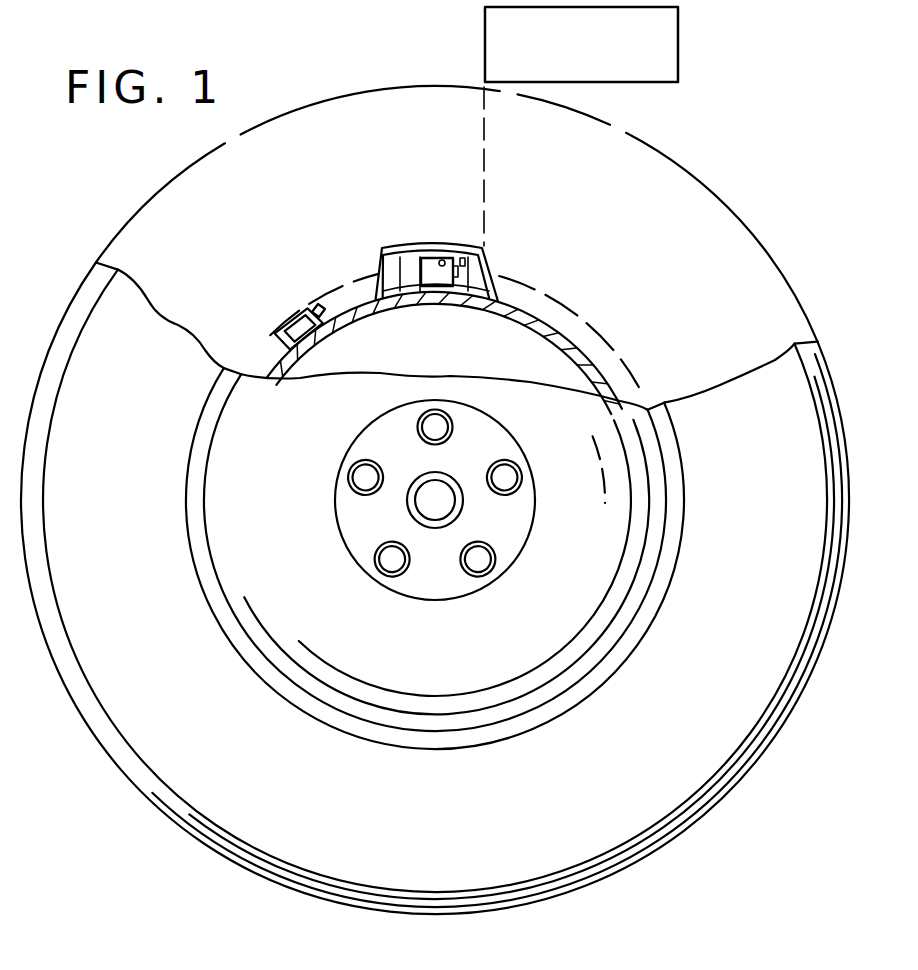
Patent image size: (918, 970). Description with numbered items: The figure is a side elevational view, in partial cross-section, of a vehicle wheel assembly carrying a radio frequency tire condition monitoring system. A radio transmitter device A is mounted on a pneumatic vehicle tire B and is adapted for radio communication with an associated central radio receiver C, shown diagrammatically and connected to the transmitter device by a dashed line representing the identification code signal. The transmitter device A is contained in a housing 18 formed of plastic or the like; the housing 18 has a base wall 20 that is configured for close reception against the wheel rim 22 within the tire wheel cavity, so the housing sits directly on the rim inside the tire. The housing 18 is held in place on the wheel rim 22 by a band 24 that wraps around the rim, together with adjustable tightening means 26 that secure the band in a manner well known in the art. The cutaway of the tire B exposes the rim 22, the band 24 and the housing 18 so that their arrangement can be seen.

The housing 18 is at (394, 247).
The base wall 20 is at (487, 306).
The wheel rim 22 is at (347, 318).
The band 24 is at (270, 345).
The adjustable tightening means 26 is at (310, 304).
The radio transmitter device A is at (464, 244).
The pneumatic vehicle tire B is at (56, 314).
The radio receiver C is at (660, 33).